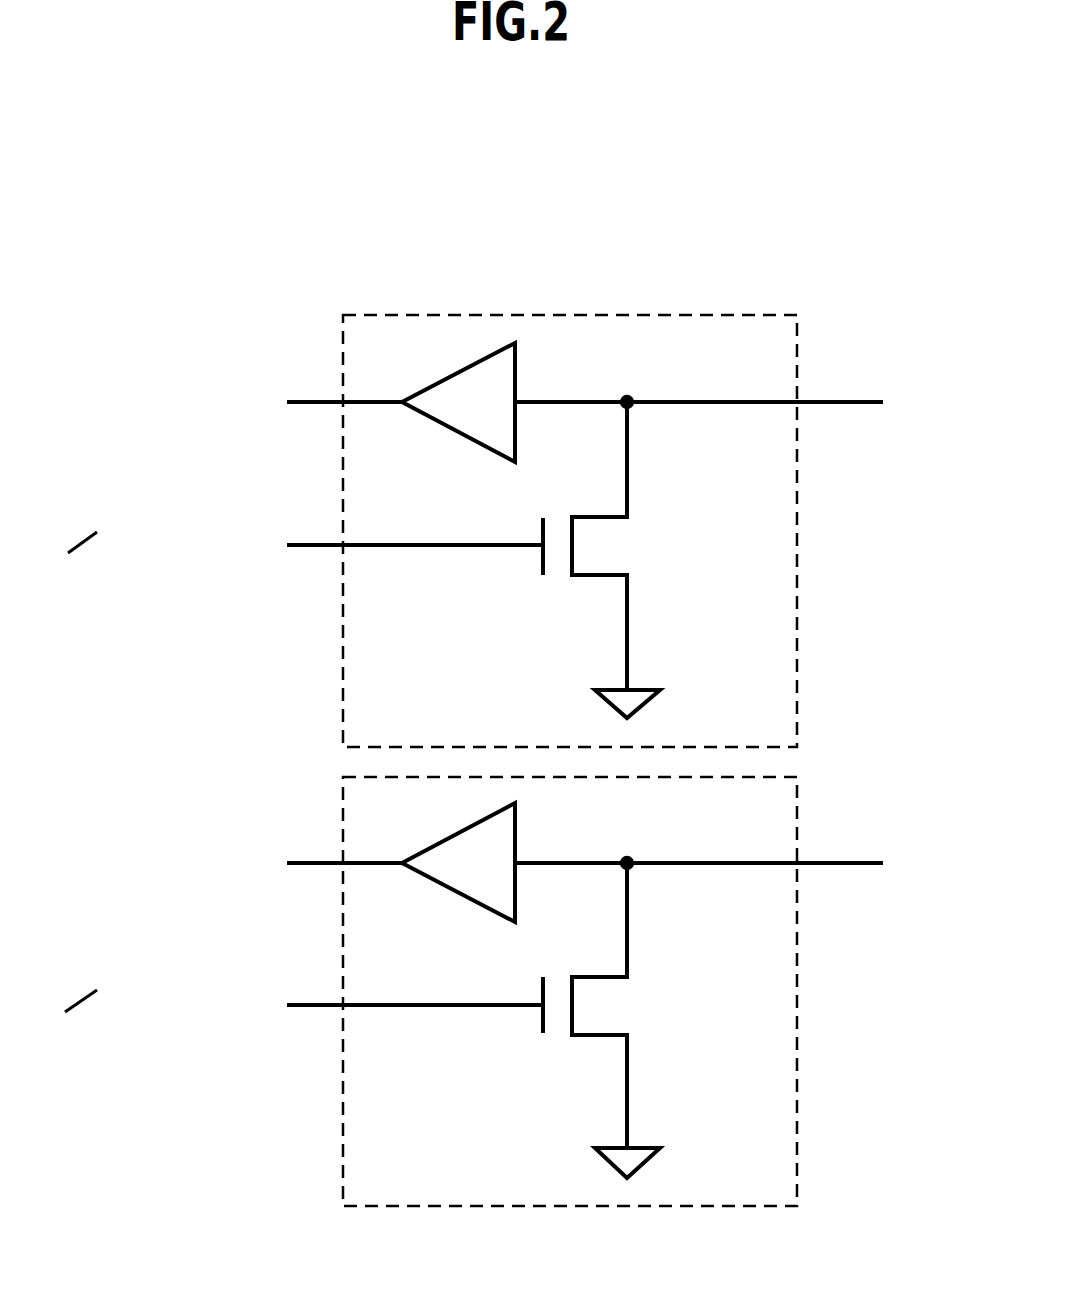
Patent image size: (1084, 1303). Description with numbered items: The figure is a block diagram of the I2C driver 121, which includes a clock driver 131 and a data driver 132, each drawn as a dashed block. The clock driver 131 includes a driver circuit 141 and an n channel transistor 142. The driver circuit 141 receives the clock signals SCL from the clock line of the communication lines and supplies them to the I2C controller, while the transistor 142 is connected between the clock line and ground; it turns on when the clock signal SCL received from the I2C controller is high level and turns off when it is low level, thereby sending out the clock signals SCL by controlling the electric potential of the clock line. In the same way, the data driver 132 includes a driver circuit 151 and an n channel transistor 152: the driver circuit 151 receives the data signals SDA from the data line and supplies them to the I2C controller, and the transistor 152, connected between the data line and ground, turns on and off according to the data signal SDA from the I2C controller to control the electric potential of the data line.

The I2C driver 121 is at (163, 211).
The clock driver 131 is at (338, 312).
The data driver 132 is at (337, 770).
The driver circuit 141 is at (455, 432).
The n channel transistor 142 is at (627, 545).
The driver circuit 151 is at (453, 893).
The n channel transistor 152 is at (627, 1005).